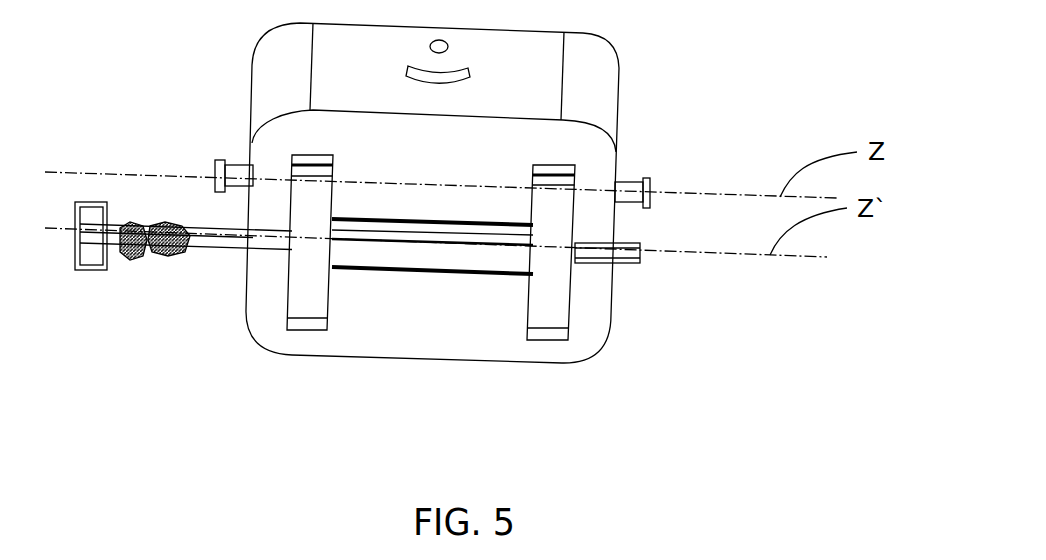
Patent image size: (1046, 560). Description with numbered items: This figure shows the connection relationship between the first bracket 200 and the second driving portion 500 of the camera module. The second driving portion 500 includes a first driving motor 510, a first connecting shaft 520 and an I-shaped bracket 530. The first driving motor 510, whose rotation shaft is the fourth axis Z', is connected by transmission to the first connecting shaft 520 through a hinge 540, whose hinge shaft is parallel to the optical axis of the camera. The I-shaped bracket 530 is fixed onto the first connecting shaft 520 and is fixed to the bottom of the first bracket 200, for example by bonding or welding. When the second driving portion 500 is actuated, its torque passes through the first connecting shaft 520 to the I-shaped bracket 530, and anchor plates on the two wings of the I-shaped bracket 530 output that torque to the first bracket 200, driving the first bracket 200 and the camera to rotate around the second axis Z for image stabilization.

The first bracket 200 is at (580, 65).
The second driving portion 500 is at (643, 405).
The first driving motor 510 is at (82, 265).
The first connecting shaft 520 is at (628, 257).
The I-shaped bracket 530 is at (443, 256).
The hinge 540 is at (155, 260).